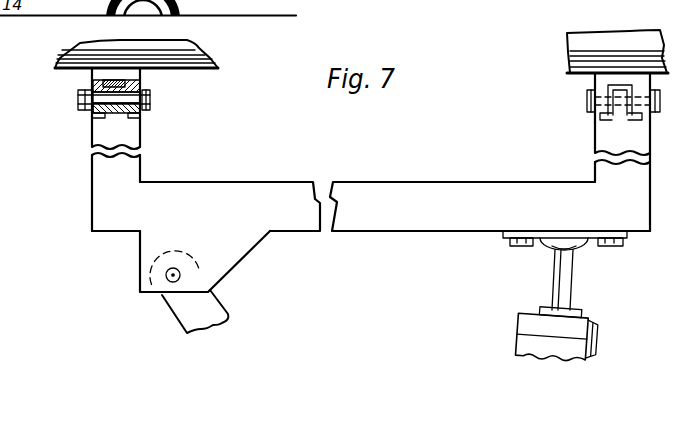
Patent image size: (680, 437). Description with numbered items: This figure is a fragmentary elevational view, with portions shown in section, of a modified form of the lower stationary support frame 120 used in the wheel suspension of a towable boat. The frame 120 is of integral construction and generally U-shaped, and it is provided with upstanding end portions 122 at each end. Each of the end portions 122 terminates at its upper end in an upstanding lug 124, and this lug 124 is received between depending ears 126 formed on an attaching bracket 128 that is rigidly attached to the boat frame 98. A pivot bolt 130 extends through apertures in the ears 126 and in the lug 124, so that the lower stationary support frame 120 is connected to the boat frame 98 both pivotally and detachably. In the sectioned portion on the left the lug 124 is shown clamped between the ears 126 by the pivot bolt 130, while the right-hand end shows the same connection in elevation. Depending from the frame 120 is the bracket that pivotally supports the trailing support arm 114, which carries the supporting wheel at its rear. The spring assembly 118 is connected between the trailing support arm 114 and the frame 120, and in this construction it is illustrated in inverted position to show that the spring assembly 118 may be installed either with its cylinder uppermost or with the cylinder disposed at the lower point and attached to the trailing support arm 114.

The boat frame 98 is at (62, 57).
The trailing support arm 114 is at (208, 305).
The spring assembly 118 is at (530, 343).
The lower stationary support frame 120 is at (260, 197).
The upstanding end portions 122 is at (123, 173).
The upstanding lugs 124 is at (141, 91).
The depending ears 126 is at (79, 105).
The attaching bracket 128 is at (120, 76).
The pivot bolts 130 is at (151, 103).